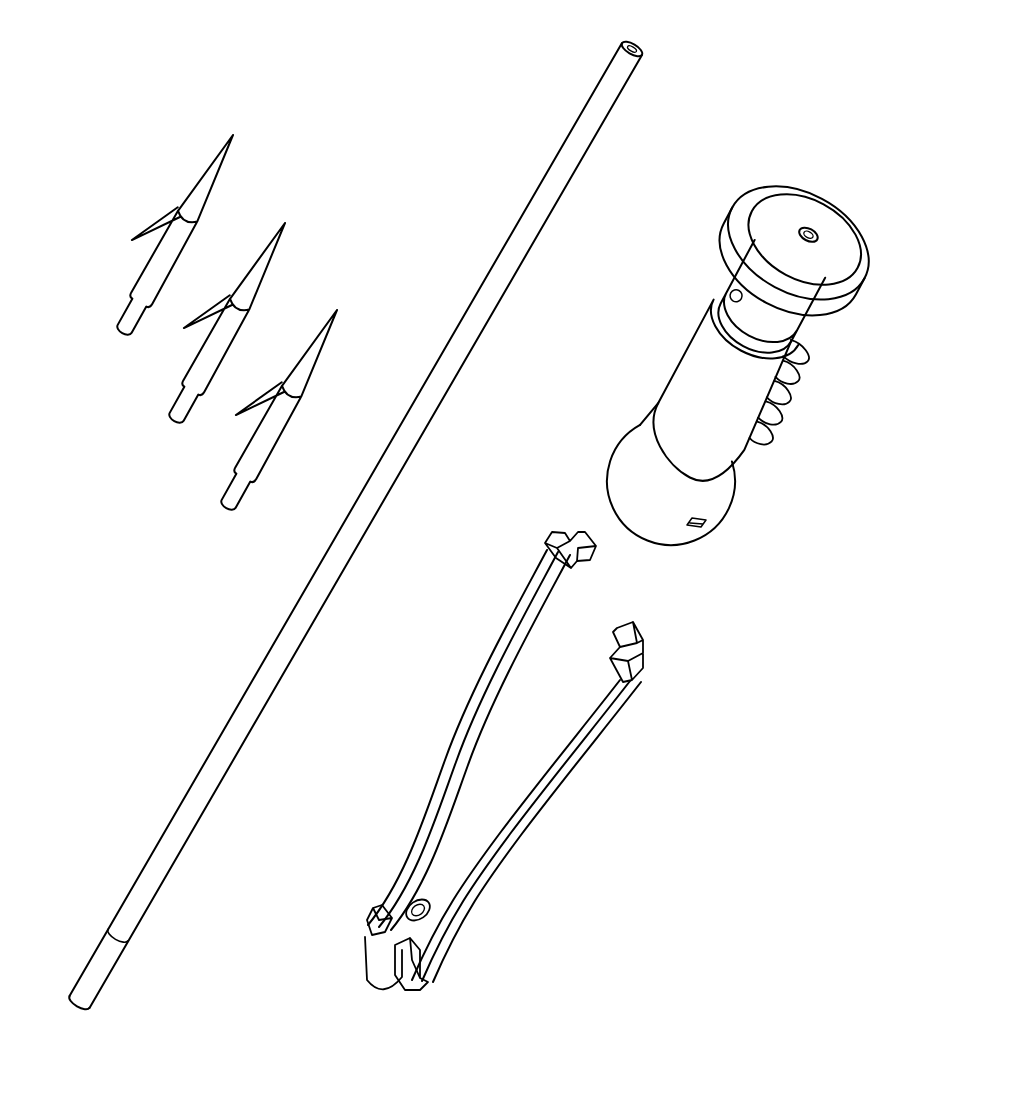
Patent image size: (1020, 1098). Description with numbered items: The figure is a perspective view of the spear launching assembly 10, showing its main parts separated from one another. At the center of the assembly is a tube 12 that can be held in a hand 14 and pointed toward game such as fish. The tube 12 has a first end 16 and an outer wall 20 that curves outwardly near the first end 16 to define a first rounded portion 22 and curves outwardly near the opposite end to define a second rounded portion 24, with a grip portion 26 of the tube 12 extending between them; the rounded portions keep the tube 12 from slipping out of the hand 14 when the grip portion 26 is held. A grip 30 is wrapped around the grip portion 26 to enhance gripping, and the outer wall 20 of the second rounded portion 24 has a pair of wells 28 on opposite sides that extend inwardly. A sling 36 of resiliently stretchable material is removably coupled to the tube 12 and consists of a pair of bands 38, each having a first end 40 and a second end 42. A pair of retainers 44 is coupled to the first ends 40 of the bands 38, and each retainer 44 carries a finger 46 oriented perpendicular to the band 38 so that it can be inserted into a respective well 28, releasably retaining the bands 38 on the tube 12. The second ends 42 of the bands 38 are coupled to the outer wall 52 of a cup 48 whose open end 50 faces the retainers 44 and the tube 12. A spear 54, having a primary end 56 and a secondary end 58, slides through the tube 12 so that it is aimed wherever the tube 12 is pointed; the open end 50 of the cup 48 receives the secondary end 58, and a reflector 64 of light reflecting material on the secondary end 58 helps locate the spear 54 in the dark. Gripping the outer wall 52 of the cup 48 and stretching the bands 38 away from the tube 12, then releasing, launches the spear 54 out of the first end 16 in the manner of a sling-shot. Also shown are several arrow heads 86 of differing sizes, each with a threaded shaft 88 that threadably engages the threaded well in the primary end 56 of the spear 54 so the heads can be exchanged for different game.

The spear launching assembly 10 is at (366, 116).
The tube 12 is at (685, 253).
The hand 14 is at (818, 218).
The first end 16 is at (657, 545).
The outer wall 20 is at (665, 435).
The first rounded portion 22 is at (865, 290).
The second rounded portion 24 is at (716, 495).
The grip portion 26 is at (799, 326).
The wells 28 is at (701, 538).
The grip 30 is at (687, 343).
The sling 36 is at (386, 810).
The bands 38 is at (460, 712).
The first end 40 is at (556, 535).
The second end 42 is at (371, 922).
The retainers 44 is at (550, 545).
The finger 46 is at (592, 565).
The cup 48 is at (387, 995).
The open end 50 is at (428, 896).
The outer wall 52 is at (378, 963).
The spear 54 is at (268, 642).
The primary end 56 is at (634, 38).
The secondary end 58 is at (118, 940).
The reflector 64 is at (78, 980).
The arrow heads 86 is at (332, 288).
The shaft 88 is at (118, 330).